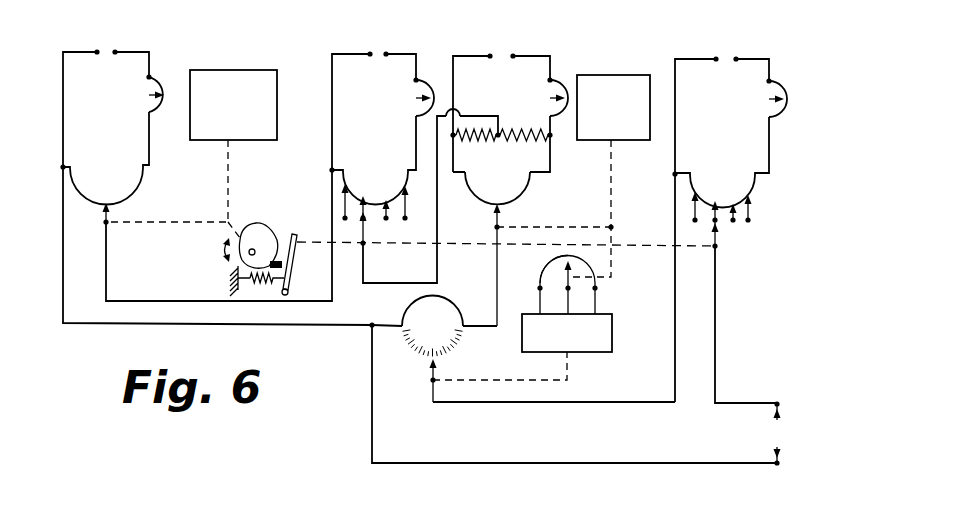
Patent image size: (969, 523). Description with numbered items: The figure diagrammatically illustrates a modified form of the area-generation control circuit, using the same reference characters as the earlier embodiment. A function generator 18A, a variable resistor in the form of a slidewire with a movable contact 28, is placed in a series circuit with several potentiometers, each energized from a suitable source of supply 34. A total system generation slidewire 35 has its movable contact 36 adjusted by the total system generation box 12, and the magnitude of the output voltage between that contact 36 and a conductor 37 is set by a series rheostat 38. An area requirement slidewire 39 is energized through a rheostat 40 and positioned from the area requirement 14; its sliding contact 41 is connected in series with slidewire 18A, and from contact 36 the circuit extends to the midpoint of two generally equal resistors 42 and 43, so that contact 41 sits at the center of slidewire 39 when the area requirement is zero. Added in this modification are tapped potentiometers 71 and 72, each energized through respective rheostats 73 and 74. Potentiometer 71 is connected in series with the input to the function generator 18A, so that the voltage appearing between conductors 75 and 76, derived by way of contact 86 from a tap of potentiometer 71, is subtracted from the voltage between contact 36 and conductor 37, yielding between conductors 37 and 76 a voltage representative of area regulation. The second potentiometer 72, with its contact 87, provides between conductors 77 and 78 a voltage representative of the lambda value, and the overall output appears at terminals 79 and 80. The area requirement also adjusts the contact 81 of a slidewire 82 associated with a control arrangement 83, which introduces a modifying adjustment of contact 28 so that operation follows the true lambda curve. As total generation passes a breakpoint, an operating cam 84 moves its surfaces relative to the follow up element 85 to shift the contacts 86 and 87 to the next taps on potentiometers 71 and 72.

The total system generation box 12 is at (235, 70).
The area requirement unit 14 is at (622, 80).
The function generator 18A is at (458, 343).
The movable contact 28 is at (430, 377).
The source of supply 34 is at (108, 50).
The total system generation slidewire 35 is at (85, 188).
The movable contact 36 is at (108, 221).
The conductor 37 is at (62, 252).
The series rheostat 38 is at (160, 73).
The area requirement slidewire 39 is at (470, 190).
The rheostat 40 is at (560, 78).
The sliding contact 41 is at (500, 222).
The resistor 42 is at (470, 138).
The resistor 43 is at (520, 130).
The tapped potentiometer 71 is at (345, 172).
The tapped potentiometer 72 is at (693, 179).
The rheostat 73 is at (428, 78).
The rheostat 74 is at (773, 80).
The conductor 75 is at (298, 304).
The conductor 76 is at (410, 285).
The conductor 77 is at (717, 322).
The conductor 78 is at (673, 305).
The output terminal 79 is at (777, 403).
The output terminal 80 is at (777, 463).
The contact 81 is at (566, 276).
The slidewire 82 is at (546, 273).
The control arrangement 83 is at (605, 353).
The operating cam 84 is at (260, 232).
The follow up element 85 is at (279, 258).
The contact 86 is at (366, 245).
The contact 87 is at (718, 228).